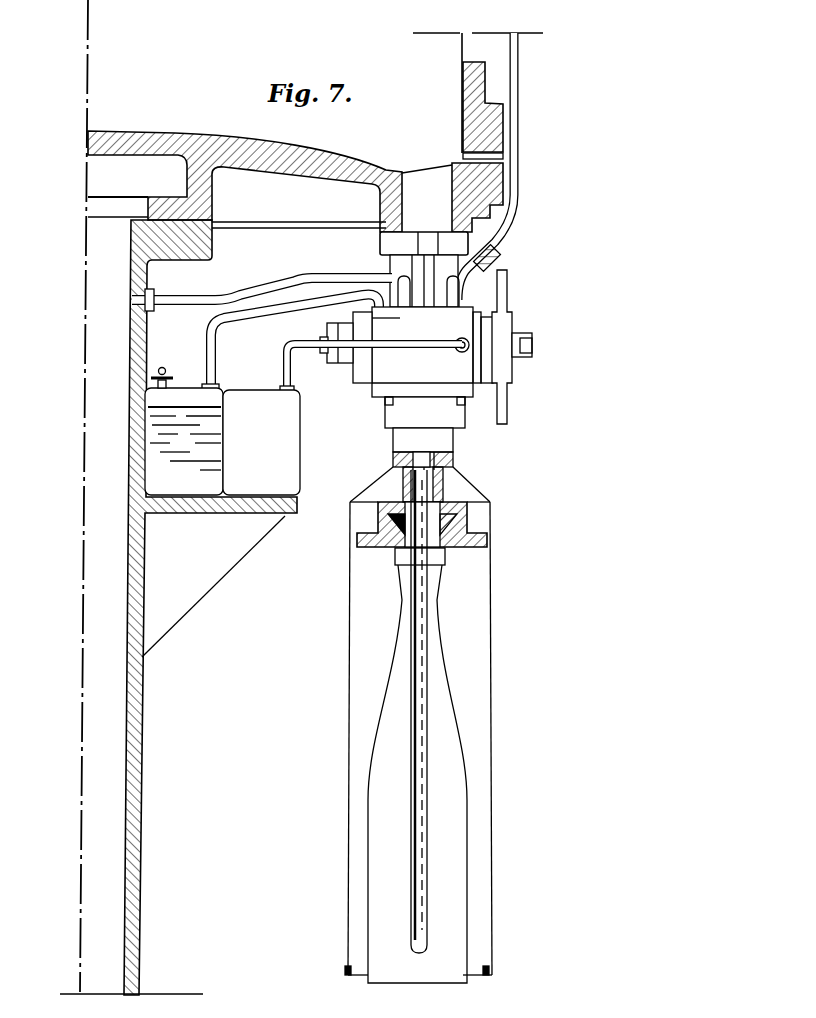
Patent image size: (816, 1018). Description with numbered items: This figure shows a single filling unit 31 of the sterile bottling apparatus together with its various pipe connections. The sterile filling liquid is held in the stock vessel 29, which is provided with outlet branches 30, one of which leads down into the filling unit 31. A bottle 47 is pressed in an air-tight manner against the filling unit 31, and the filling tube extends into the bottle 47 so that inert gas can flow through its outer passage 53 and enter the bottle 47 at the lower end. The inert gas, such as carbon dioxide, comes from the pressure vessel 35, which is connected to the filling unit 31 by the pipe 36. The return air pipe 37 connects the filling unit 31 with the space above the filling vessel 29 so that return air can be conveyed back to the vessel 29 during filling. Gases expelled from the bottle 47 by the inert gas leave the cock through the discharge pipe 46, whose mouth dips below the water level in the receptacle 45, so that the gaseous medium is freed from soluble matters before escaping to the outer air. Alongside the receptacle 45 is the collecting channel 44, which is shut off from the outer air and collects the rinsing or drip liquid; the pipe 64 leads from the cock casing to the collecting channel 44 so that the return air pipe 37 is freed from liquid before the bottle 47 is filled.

The stock vessel 29 is at (473, 119).
The outlet branch 30 is at (295, 181).
The filling unit 31 is at (460, 328).
The pressure vessel 35 is at (197, 607).
The pipe 36 is at (242, 291).
The return air pipe 37 is at (513, 228).
The collecting channel 44 is at (261, 442).
The water receptacle 45 is at (184, 432).
The discharge pipe 46 is at (247, 325).
The bottle 47 is at (455, 857).
The outer passage of the filling tube 53 is at (410, 933).
The pipe 64 is at (292, 366).